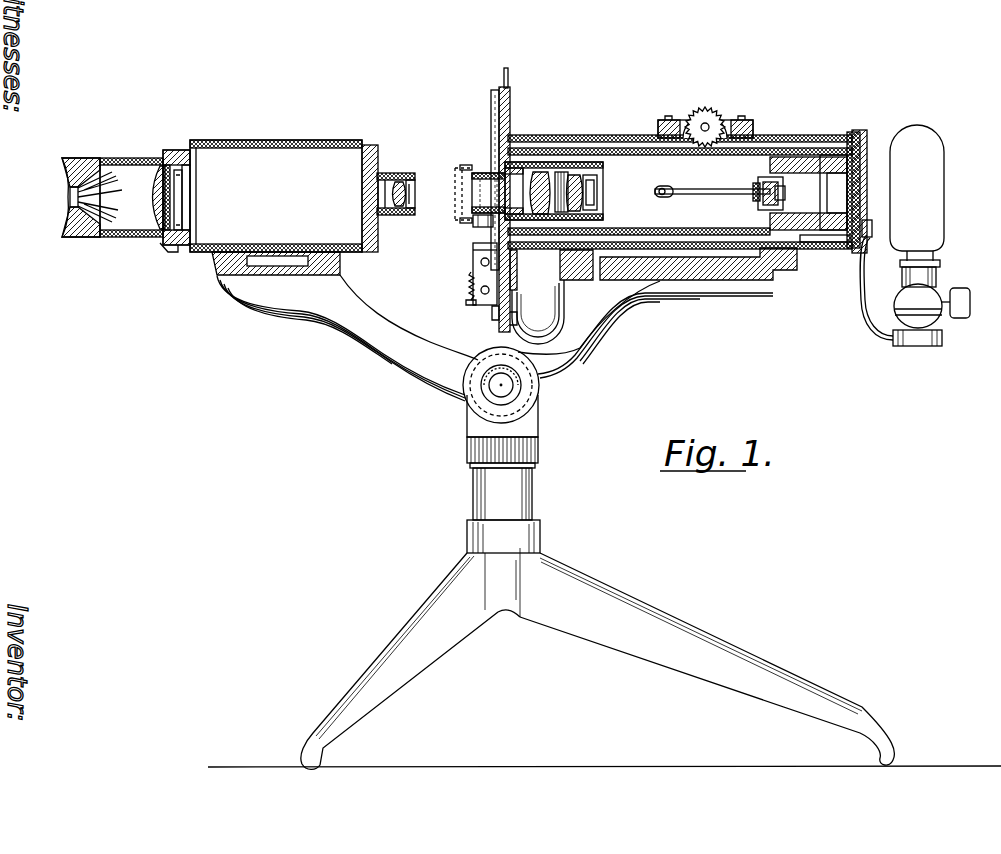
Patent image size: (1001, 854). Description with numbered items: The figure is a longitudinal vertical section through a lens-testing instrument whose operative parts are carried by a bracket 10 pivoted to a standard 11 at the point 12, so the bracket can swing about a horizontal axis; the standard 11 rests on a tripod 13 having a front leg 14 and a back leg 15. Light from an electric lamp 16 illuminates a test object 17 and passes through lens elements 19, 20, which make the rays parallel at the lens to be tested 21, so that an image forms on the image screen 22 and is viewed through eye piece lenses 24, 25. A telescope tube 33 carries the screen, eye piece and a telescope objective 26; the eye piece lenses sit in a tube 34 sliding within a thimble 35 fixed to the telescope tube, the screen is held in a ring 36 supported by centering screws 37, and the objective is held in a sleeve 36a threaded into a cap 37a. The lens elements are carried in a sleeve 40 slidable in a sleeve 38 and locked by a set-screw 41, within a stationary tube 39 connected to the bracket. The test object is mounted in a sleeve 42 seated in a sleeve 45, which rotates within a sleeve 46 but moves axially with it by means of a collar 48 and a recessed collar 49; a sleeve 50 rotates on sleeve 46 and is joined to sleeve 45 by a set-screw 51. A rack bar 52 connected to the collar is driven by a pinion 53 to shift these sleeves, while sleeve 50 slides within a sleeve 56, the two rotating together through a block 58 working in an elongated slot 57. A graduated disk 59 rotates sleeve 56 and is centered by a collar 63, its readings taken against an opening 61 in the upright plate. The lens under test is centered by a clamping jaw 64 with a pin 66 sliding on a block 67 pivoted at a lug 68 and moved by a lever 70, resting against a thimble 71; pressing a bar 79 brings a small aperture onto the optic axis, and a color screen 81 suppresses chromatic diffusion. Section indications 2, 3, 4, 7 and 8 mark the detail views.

The bracket 10 is at (380, 333).
The standard 11 is at (478, 489).
The pivot point 12 is at (498, 387).
The tripod 13 is at (530, 550).
The front leg 14 is at (398, 638).
The back leg 15 is at (688, 630).
The electric lamp 16 is at (944, 174).
The test object 17 is at (760, 188).
The lens element 19 is at (543, 221).
The lens element 20 is at (602, 193).
The lens to be tested 21 is at (459, 172).
The image screen 22 is at (183, 189).
The eye piece lens 24 is at (70, 197).
The eye piece lens 25 is at (152, 173).
The telescope objective 26 is at (392, 180).
The telescope tube 33 is at (275, 153).
The eye piece tube 34 is at (118, 172).
The thimble 35 is at (164, 244).
The ring 36 is at (188, 226).
The sleeve 36a is at (405, 207).
The centering screws 37 is at (188, 159).
The cap 37a is at (373, 146).
The sleeve 38 is at (534, 171).
The stationary tube 39 is at (553, 250).
The sleeve 40 is at (572, 163).
The set-screw 41 is at (560, 163).
The sleeve 42 is at (760, 203).
The sleeve 45 is at (817, 218).
The sleeve 46 is at (793, 158).
The collar 48 is at (838, 243).
The recessed collar 49 is at (863, 140).
The sleeve 50 is at (820, 150).
The set-screw 51 is at (773, 272).
The rack bar 52 is at (768, 136).
The pinion 53 is at (713, 108).
The sleeve 56 is at (645, 235).
The elongated slot 57 is at (712, 191).
The block 58 is at (661, 197).
The disk 59 is at (513, 288).
The opening 61 is at (497, 105).
The collar 63 is at (513, 157).
The clamping jaw 64 is at (483, 258).
The pin 66 is at (468, 172).
The block 67 is at (470, 280).
The lug 68 is at (488, 317).
The lever 70 is at (475, 247).
The thimble 71 is at (483, 167).
The bar 79 is at (508, 84).
The color screen 81 is at (780, 193).
The section line 2- 2 is at (647, 195).
The section line 3- 3 is at (542, 53).
The section line 4- 4 is at (172, 130).
The section line 7- 7 is at (440, 135).
The section line 8- 8 is at (645, 135).